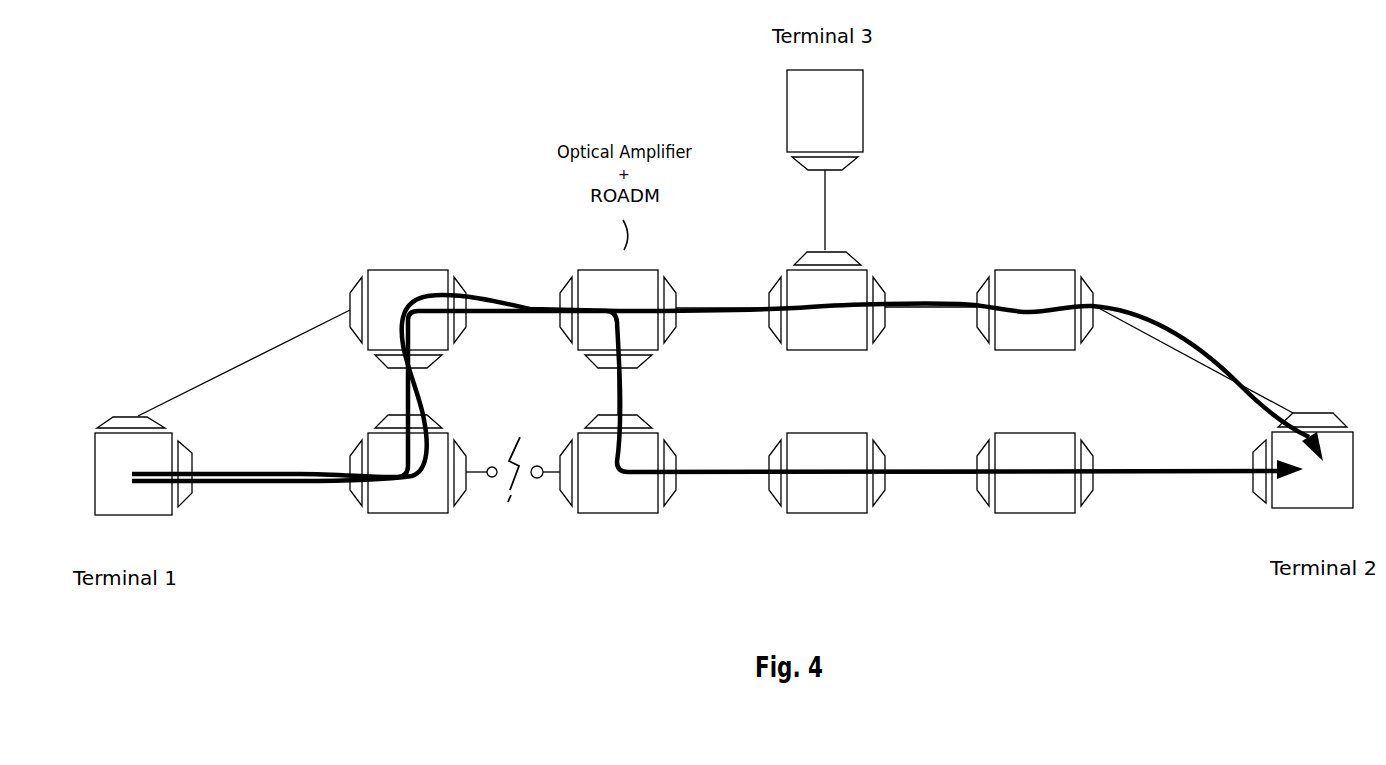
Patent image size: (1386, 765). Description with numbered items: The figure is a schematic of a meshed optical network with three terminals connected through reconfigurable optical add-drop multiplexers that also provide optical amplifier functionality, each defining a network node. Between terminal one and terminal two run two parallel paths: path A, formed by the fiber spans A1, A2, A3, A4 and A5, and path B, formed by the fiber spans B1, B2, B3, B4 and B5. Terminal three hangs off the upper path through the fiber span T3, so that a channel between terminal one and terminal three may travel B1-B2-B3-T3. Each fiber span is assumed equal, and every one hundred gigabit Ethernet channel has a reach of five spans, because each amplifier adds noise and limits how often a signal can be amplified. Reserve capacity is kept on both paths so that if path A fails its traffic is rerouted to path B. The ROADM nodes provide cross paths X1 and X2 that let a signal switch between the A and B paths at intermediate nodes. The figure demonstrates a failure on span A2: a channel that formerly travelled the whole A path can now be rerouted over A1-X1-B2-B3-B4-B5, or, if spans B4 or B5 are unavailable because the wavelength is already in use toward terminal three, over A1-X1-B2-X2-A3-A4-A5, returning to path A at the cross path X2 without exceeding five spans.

The fiber span A1 is at (271, 501).
The fiber span A2 is at (513, 484).
The fiber span A3 is at (722, 500).
The fiber span A4 is at (931, 500).
The fiber span A5 is at (1173, 499).
The fiber span B1 is at (244, 362).
The fiber span B2 is at (513, 284).
The fiber span B3 is at (722, 283).
The fiber span B4 is at (931, 282).
The fiber span B5 is at (1193, 359).
The cross path X1 is at (427, 391).
The cross path X2 is at (641, 391).
The fiber span T3 is at (848, 210).